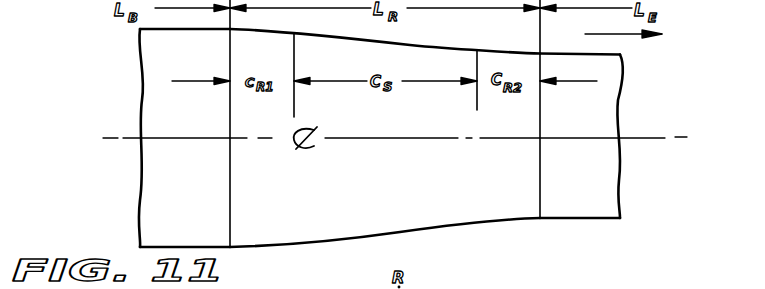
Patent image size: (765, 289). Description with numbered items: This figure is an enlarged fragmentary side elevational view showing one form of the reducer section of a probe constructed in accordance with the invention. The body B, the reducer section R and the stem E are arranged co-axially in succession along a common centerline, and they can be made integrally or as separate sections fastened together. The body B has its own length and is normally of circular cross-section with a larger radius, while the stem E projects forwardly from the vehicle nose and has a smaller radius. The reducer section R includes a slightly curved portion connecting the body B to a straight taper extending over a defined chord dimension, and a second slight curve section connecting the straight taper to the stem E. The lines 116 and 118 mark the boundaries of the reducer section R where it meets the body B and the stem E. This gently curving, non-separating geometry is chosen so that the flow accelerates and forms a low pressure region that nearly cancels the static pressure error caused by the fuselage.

The section line at rotor inlet 116 is at (231, 211).
The section line at rotor exit 118 is at (541, 191).
The body B is at (164, 62).
The reducer section R is at (431, 62).
The stem E is at (610, 92).